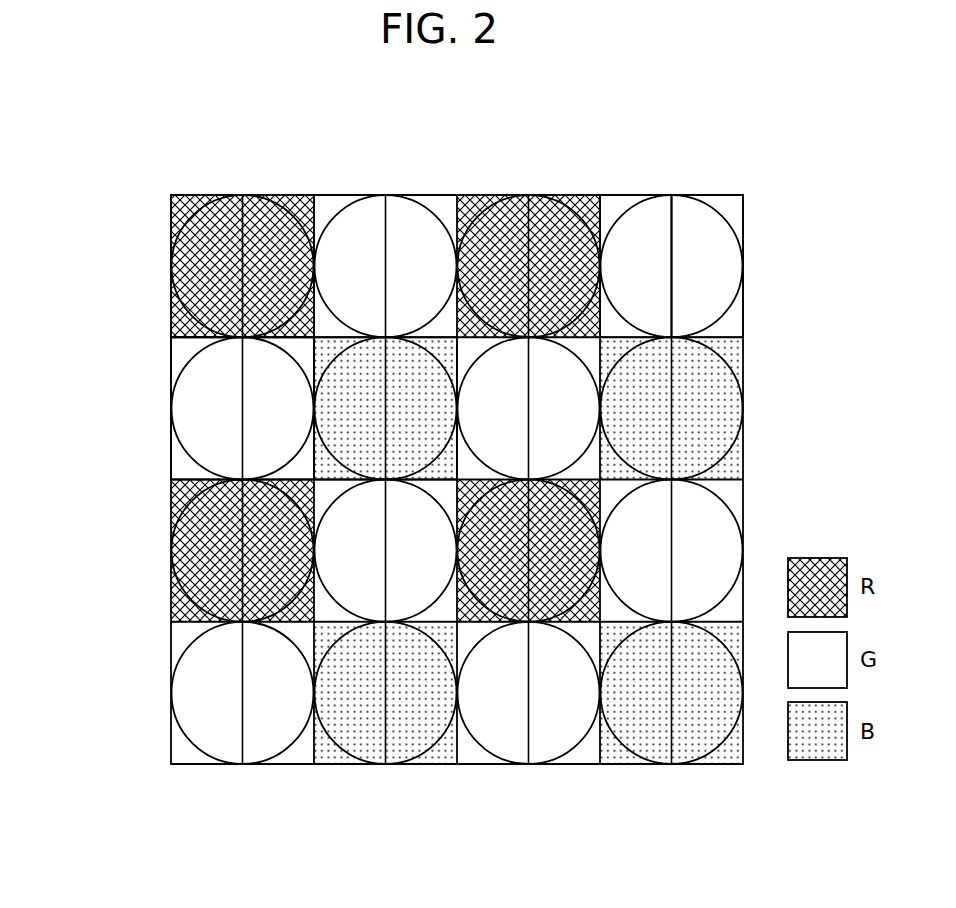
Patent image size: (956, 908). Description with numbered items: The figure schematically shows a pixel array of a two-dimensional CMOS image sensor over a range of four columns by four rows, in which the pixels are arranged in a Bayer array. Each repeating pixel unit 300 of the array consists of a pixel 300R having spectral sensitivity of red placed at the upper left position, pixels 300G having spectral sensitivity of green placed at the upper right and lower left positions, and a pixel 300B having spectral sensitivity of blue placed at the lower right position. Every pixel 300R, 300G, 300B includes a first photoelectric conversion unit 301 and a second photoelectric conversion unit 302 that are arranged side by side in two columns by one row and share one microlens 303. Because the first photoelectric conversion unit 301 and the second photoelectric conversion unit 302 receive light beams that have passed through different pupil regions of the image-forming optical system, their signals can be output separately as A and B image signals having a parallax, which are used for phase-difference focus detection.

The pixel unit 300 is at (90, 282).
The pixel having spectral sensitivity of R 300R is at (205, 289).
The pixel having spectral sensitivity of G 300G is at (200, 391).
The pixel having spectral sensitivity of B 300B is at (332, 412).
The first photoelectric conversion unit 301 is at (643, 215).
The second photoelectric conversion unit 302 is at (708, 215).
The microlens 303 is at (738, 310).